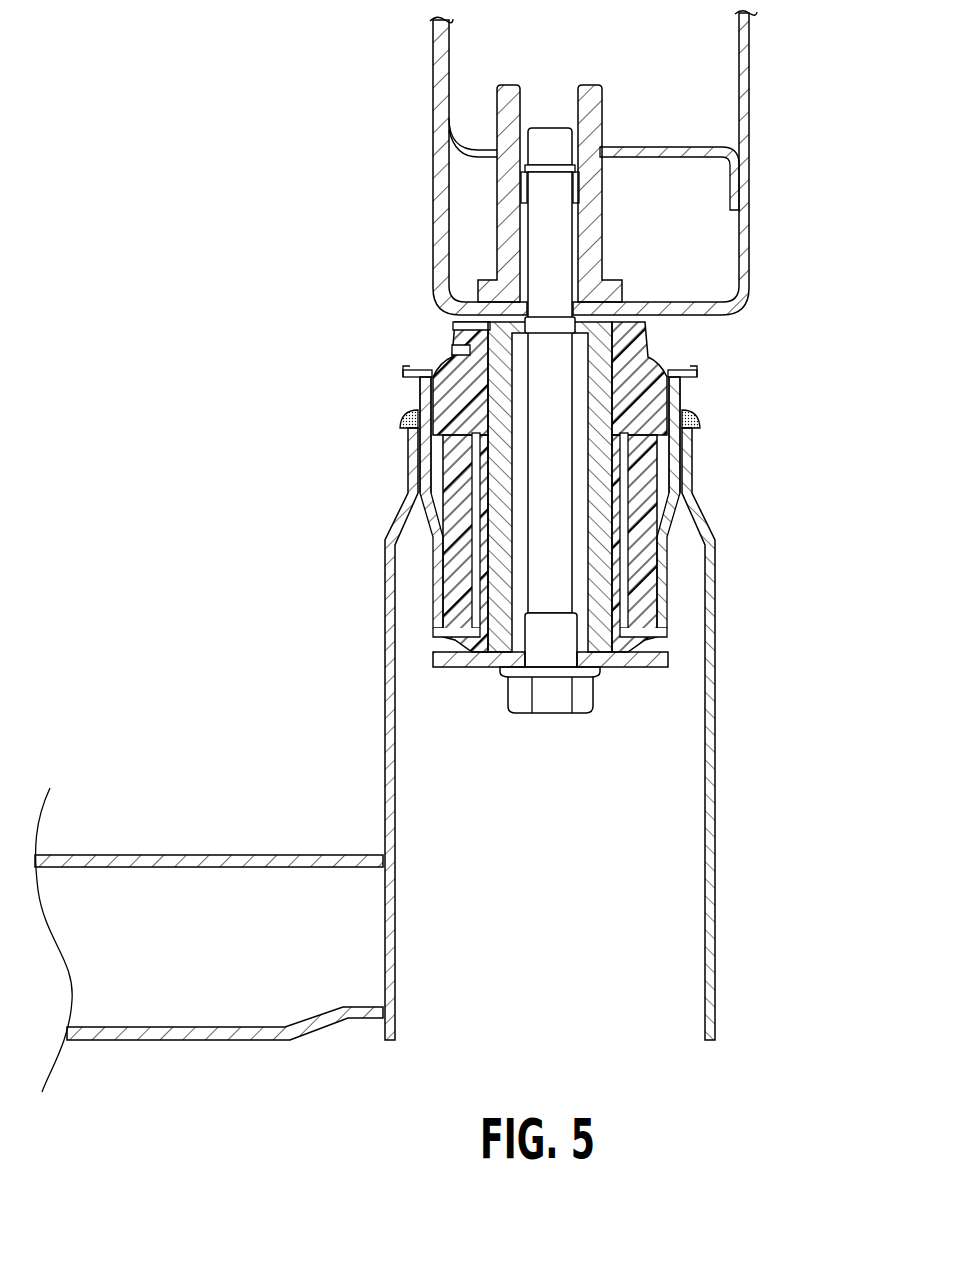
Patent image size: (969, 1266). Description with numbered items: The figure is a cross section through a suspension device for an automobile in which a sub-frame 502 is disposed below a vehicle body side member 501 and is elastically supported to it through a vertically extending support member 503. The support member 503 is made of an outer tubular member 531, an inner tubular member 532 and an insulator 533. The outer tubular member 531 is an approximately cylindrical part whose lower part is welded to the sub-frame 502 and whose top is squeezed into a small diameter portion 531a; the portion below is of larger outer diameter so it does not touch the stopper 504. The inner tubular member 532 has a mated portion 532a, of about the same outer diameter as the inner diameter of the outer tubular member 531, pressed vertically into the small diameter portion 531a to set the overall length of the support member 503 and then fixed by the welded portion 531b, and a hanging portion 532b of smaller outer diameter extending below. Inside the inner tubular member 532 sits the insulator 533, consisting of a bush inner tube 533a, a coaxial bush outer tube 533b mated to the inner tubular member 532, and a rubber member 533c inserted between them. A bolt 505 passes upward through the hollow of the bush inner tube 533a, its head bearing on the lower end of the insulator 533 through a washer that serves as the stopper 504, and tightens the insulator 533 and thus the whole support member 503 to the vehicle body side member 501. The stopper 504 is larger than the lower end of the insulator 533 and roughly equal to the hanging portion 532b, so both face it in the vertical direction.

The vehicle body side member 501 is at (745, 180).
The sub-frame 502 is at (228, 858).
The support member 503 is at (737, 352).
The stopper 504 is at (445, 660).
The bolt 505 is at (553, 715).
The outer tubular member 531 is at (724, 573).
The small diameter portion 531a is at (690, 455).
The welded portion 531b is at (695, 420).
The inner tubular member 532 is at (302, 405).
The mated portion 532a is at (403, 400).
The hanging portion 532b is at (435, 612).
The insulator 533 is at (302, 285).
The bush inner tube 533a is at (447, 322).
The bush outer tube 533b is at (405, 372).
The rubber member 533c is at (452, 347).